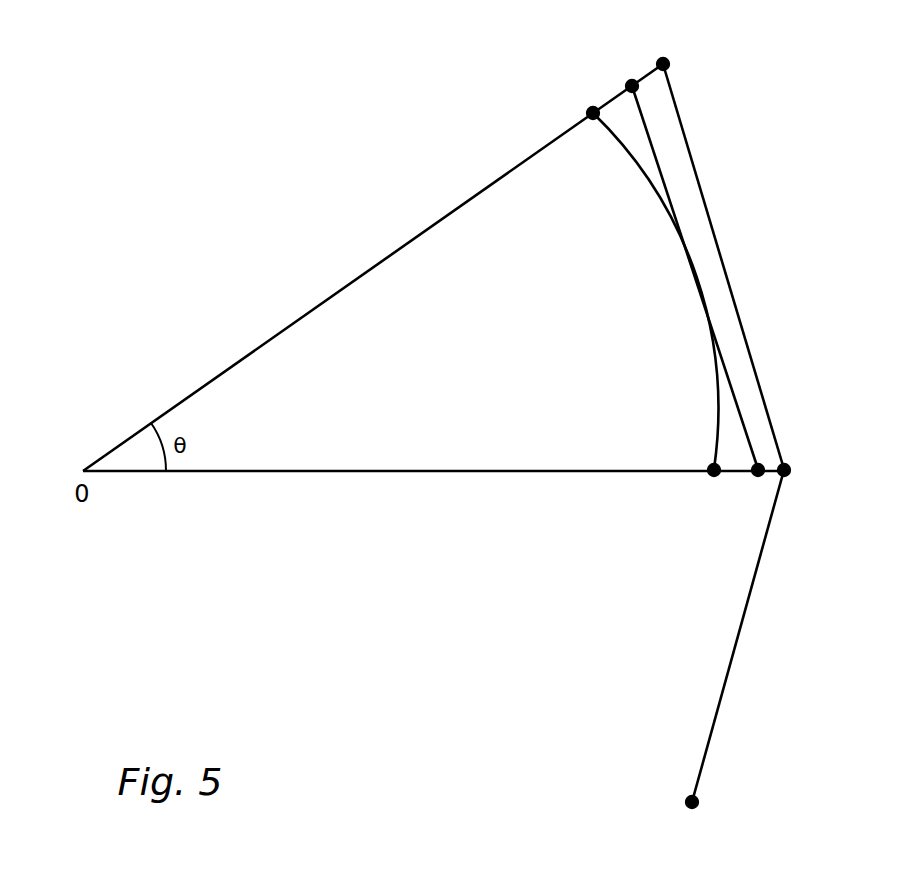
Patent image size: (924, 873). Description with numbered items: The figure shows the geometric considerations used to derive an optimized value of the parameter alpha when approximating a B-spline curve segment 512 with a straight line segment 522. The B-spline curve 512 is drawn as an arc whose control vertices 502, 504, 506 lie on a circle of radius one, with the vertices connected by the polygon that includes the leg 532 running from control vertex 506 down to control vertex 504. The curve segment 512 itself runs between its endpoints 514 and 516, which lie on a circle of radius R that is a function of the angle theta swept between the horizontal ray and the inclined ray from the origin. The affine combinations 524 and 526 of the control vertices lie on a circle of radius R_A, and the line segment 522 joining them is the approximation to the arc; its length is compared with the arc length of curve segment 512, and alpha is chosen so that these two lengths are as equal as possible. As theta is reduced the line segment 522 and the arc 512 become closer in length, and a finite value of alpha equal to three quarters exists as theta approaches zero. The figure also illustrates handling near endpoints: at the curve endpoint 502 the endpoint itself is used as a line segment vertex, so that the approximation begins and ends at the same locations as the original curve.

The control vertex 502 is at (698, 805).
The control vertex 504 is at (791, 466).
The control vertex 506 is at (670, 59).
The B-spline curve 512 is at (647, 183).
The curve segment endpoint 514 is at (710, 478).
The curve segment endpoint 516 is at (590, 110).
The line segment 522 is at (735, 395).
The affine combination 524 is at (754, 478).
The affine combination 526 is at (628, 80).
The outer line 532 is at (713, 227).